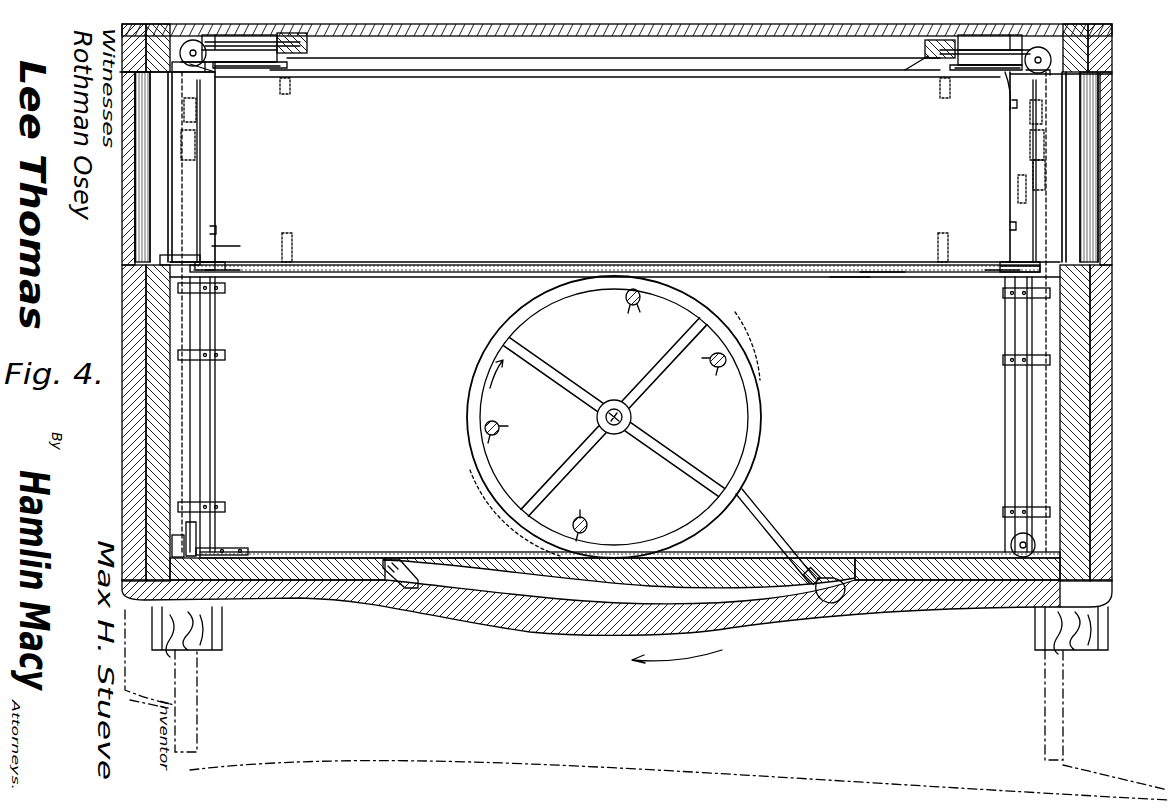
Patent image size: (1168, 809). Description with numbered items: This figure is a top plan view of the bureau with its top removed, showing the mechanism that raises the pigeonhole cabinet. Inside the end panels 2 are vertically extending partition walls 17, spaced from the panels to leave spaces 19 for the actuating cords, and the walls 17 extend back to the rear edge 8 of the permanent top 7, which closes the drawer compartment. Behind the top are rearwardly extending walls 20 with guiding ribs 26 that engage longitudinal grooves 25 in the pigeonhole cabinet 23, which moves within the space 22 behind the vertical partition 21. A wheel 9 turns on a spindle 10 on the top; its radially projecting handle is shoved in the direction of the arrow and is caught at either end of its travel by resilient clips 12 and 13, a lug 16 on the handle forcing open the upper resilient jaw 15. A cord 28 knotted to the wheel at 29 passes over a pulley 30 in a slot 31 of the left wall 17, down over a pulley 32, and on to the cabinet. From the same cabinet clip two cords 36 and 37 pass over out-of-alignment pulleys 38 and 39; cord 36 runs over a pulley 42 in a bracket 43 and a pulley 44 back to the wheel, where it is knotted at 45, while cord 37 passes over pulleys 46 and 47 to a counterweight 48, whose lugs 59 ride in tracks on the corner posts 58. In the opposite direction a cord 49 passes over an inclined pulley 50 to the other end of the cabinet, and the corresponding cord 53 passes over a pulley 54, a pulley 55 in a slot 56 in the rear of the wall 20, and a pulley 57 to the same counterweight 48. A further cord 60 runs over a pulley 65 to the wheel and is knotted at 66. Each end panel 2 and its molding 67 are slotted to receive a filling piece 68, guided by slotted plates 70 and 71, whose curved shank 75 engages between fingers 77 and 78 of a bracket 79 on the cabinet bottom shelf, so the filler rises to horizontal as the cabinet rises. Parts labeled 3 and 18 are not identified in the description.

The end panel 2 is at (975, 583).
The side wall 3 is at (132, 418).
The permanent top 7 is at (610, 414).
The rear edge of permanent top 8 is at (899, 278).
The wheel 9 is at (755, 440).
The spindle 10 is at (624, 417).
The clip 12 is at (814, 568).
The clip 13 is at (400, 586).
The upper resilient jaw 15 is at (824, 602).
The lug 16 is at (790, 586).
The partition wall 17 is at (206, 410).
The bracket 18 is at (1046, 356).
The space 19 is at (166, 317).
The rearwardly extending wall 20 is at (212, 211).
The vertical partition 21 is at (848, 278).
The pigeonhole cabinet space 22 is at (832, 72).
The pigeonhole cabinet 23 is at (615, 228).
The longitudinal groove 25 is at (216, 232).
The guiding rib 26 is at (1088, 222).
The cord 28 is at (396, 553).
The knot 29 is at (718, 369).
The pulley 30 is at (218, 552).
The slot 31 is at (200, 548).
The pulley 32 is at (172, 541).
The cord 36 is at (421, 268).
The cord 37 is at (242, 75).
The pulley 38 is at (201, 185).
The pulley 39 is at (196, 160).
The pulley 42 is at (162, 260).
The bracket 43 is at (214, 250).
The pulley 44 is at (202, 262).
The knot 45 is at (629, 306).
The pulley 46 is at (206, 74).
The pulley 47 is at (302, 60).
The counterweight 48 is at (541, 50).
The cord 49 is at (866, 557).
The pulley 50 is at (1032, 545).
The cord 53 is at (1044, 135).
The pulley 54 is at (1060, 162).
The pulley 55 is at (1050, 58).
The slot 56 is at (1008, 72).
The pulley 57 is at (1022, 182).
The corner post 58 is at (236, 63).
The lug 59 is at (285, 36).
The cord 60 is at (880, 270).
The pulley 65 is at (1006, 264).
The knot 66 is at (499, 431).
The molding 67 is at (128, 205).
The filling piece 68 is at (148, 222).
The slotted plate 70 is at (290, 88).
The slotted plate 71 is at (176, 286).
The shank 75 is at (200, 46).
The finger 77 is at (772, 528).
The finger 78 is at (306, 62).
The bracket 79 is at (272, 42).